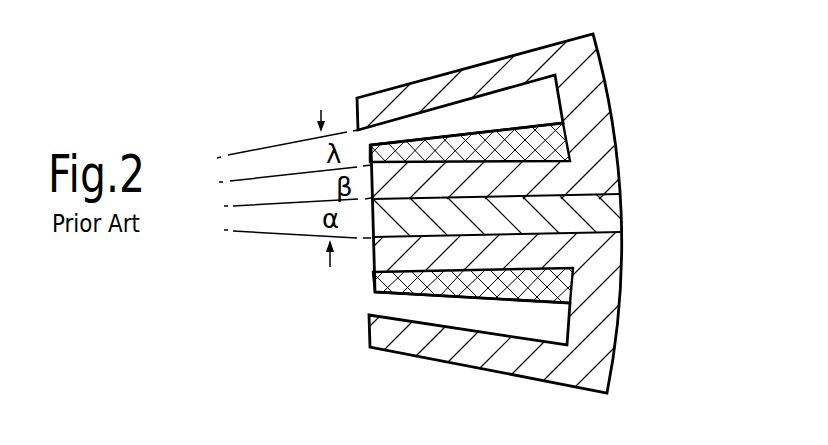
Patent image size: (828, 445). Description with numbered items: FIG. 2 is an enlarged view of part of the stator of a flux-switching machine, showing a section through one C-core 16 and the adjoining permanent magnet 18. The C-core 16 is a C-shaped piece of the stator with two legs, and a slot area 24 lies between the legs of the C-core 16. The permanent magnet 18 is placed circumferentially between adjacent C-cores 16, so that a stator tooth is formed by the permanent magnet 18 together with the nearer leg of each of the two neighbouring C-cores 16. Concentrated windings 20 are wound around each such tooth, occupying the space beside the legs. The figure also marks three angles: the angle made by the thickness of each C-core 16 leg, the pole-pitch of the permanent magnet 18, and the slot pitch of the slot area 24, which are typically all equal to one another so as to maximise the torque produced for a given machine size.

The C-core 16 is at (592, 125).
The permanent magnet 18 is at (582, 216).
The concentrated winding 20 is at (550, 280).
The slot area 24 is at (537, 332).